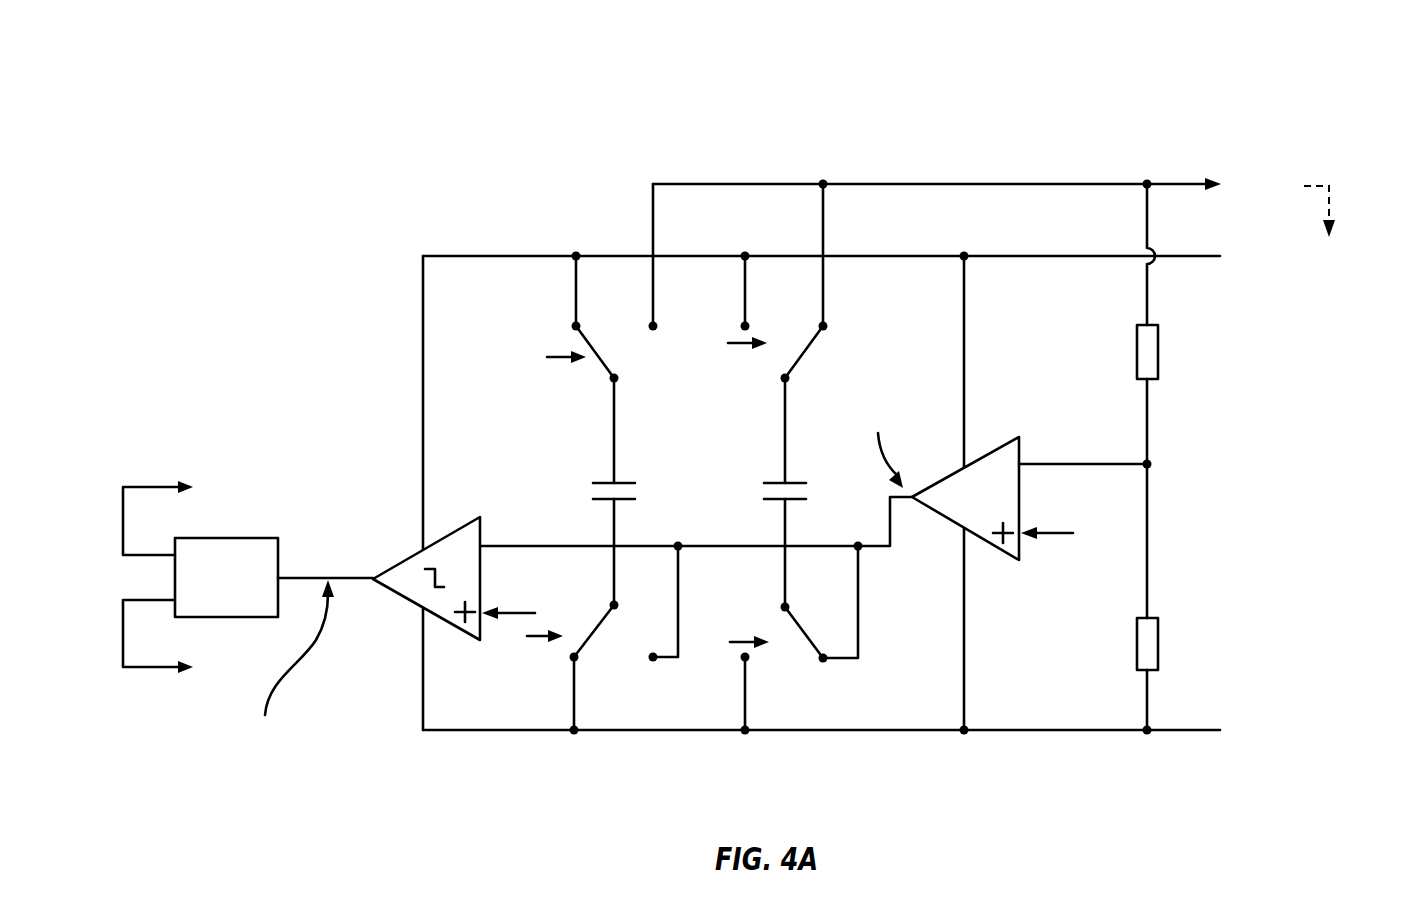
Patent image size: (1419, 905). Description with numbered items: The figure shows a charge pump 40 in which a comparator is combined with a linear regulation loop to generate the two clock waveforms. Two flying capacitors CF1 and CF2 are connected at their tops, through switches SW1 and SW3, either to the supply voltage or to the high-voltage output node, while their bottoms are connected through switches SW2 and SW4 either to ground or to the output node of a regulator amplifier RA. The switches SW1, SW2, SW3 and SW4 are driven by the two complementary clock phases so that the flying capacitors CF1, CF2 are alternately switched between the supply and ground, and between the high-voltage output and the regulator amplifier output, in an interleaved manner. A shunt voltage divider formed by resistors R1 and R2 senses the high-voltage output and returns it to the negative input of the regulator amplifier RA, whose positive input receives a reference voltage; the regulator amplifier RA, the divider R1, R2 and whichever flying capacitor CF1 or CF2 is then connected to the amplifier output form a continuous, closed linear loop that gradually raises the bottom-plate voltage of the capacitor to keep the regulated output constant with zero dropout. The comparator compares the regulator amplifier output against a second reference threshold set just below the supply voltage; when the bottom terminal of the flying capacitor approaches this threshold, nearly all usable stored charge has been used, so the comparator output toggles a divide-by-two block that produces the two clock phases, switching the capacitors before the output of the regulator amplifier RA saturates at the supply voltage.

The switched-capacitor voltage regulator circuit 40 is at (270, 100).
The resistor R1 is at (1170, 281).
The resistor R2 is at (1170, 674).
The regulator amplifier RA is at (1029, 498).
The switch SW1 is at (599, 326).
The switch SW2 is at (590, 638).
The switch SW3 is at (777, 320).
The switch SW4 is at (771, 638).
The flying capacitor CF1 is at (584, 491).
The flying capacitor CF2 is at (755, 492).